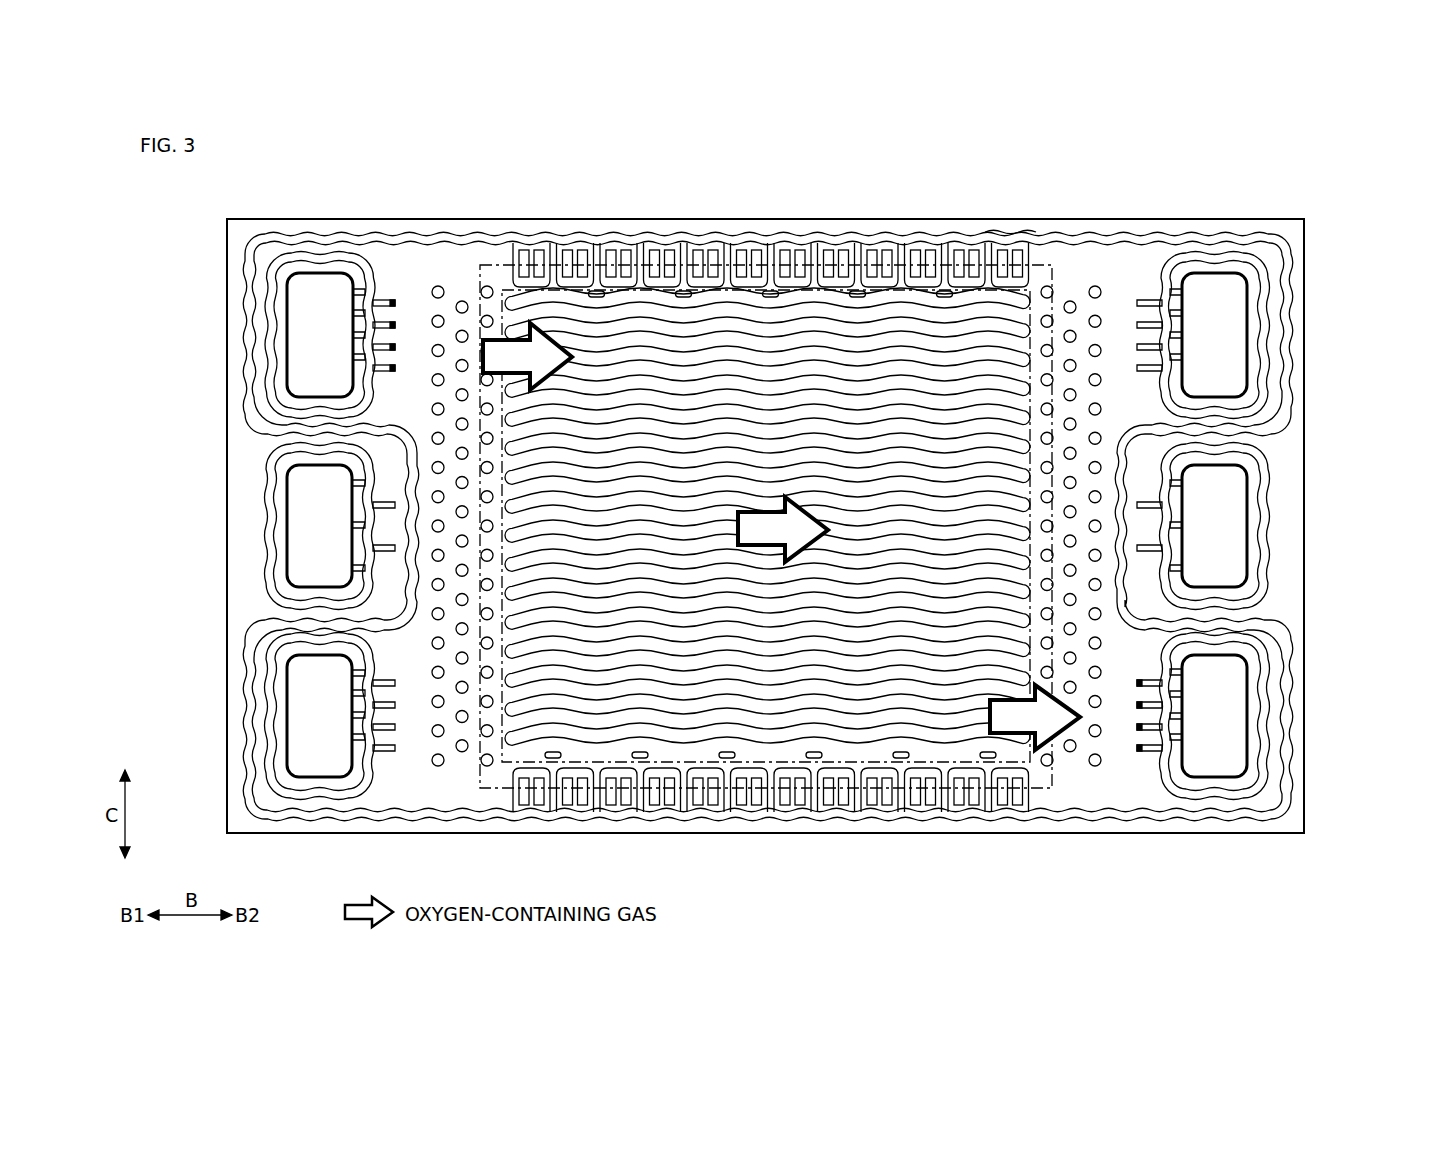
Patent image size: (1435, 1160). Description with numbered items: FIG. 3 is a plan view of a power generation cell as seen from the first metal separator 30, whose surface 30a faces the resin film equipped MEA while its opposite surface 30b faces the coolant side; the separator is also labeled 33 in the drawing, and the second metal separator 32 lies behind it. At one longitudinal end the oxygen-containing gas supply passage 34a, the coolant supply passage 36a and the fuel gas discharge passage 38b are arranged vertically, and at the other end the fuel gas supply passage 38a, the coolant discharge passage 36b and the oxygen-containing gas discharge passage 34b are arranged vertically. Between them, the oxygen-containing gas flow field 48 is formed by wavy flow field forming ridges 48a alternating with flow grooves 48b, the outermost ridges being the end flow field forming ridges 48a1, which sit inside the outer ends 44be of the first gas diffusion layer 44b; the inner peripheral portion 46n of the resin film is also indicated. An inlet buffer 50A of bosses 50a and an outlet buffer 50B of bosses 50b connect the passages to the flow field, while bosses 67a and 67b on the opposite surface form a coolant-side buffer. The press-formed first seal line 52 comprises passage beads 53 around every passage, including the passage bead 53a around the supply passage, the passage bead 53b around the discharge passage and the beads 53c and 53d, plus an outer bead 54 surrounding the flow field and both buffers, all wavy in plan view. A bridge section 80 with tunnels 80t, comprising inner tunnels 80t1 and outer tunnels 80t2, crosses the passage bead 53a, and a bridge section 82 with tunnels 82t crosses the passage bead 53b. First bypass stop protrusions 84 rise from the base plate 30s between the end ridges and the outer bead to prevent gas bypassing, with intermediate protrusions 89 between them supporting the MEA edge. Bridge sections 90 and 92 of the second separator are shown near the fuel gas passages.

The first metal separator 30 is at (613, 216).
The surface 30a is at (532, 246).
The surface 30b is at (575, 242).
The base plate 30s is at (1000, 232).
The second metal separator 32 is at (640, 216).
The separator plate 33 is at (1280, 143).
The oxygen-containing gas supply passage 34a is at (315, 305).
The oxygen-containing gas discharge passage 34b is at (1230, 704).
The coolant supply passage 36a is at (300, 500).
The coolant discharge passage 36b is at (1232, 504).
The fuel gas supply passage 38a is at (1230, 320).
The fuel gas discharge passage 38b is at (300, 697).
The first gas diffusion layer 44b is at (482, 262).
The outer ends 44be is at (538, 262).
The inner peripheral portion 46n is at (780, 770).
The oxygen-containing gas flow field 48 is at (767, 507).
The flow field forming ridges 48a is at (767, 511).
The end flow field forming ridges 48a1 is at (922, 298).
The flow grooves 48b is at (732, 312).
The inlet buffer 50A is at (301, 470).
The bosses 50a is at (481, 585).
The outlet buffer 50B is at (1229, 469).
The bosses 50b is at (1053, 612).
The first seal line 52 is at (783, 571).
The passage beads 53 is at (270, 462).
The passage bead 53a is at (270, 322).
The passage bead 53b is at (1324, 876).
The passage bead around fuel gas supply passage 53c is at (1272, 302).
The passage bead around fuel gas discharge passage 53d is at (268, 735).
The outer bead 54 is at (1197, 816).
The bosses 67a is at (461, 300).
The bosses 67b is at (1070, 300).
The bridge section 80 is at (273, 275).
The tunnels 80t is at (394, 322).
The inner tunnels 80t1 is at (364, 298).
The outer tunnels 80t2 is at (380, 328).
The bridge section 82 is at (1133, 780).
The tunnels 82t is at (1175, 738).
The first bypass stop protrusions 84 is at (769, 527).
The intermediate protrusions 89 is at (968, 250).
The bridge section 90 is at (1147, 270).
The bridge section 92 is at (386, 764).